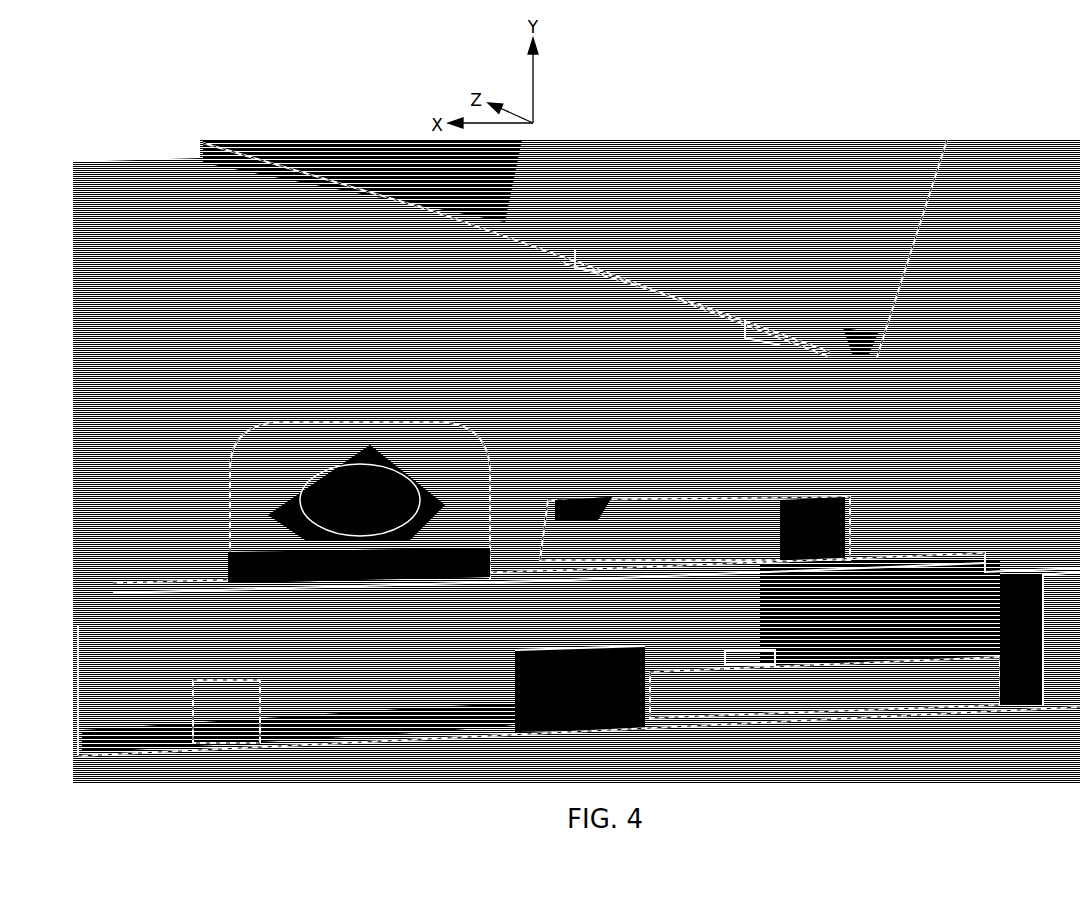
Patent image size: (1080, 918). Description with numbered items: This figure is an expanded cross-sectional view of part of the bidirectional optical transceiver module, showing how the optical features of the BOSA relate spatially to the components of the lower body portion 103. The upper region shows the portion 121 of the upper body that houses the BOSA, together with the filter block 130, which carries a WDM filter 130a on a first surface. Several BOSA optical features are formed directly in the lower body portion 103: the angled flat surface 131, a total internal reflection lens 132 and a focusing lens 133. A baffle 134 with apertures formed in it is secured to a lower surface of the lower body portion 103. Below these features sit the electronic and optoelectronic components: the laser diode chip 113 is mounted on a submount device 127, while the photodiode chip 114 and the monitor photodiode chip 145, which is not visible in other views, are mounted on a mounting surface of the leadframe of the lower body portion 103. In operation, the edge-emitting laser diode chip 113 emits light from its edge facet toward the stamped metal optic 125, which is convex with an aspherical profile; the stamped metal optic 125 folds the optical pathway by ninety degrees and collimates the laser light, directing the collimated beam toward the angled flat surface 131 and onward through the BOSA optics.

The lower body portion 103 is at (898, 752).
The laser diode chip 113 is at (762, 648).
The photodiode chip 114 is at (548, 655).
The portion that houses the BOSA 121 is at (1015, 170).
The stamped metal optic 125 is at (800, 600).
The submount device 127 is at (940, 655).
The filter block 130 is at (815, 170).
The WDM filter 130a is at (690, 278).
The angled flat surface 131 is at (770, 502).
The total internal reflection (TIR) lens 132 is at (367, 500).
The focusing lens 133 is at (603, 500).
The baffle 134 is at (417, 577).
The monitor photodiode chip 145 is at (220, 680).